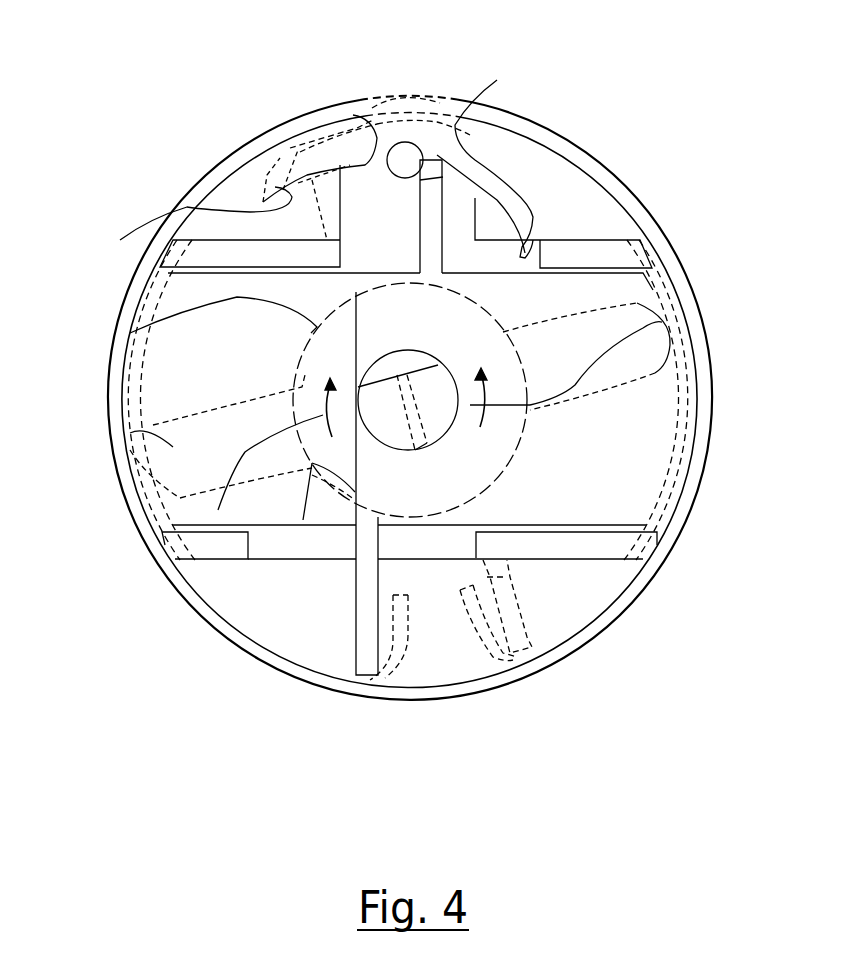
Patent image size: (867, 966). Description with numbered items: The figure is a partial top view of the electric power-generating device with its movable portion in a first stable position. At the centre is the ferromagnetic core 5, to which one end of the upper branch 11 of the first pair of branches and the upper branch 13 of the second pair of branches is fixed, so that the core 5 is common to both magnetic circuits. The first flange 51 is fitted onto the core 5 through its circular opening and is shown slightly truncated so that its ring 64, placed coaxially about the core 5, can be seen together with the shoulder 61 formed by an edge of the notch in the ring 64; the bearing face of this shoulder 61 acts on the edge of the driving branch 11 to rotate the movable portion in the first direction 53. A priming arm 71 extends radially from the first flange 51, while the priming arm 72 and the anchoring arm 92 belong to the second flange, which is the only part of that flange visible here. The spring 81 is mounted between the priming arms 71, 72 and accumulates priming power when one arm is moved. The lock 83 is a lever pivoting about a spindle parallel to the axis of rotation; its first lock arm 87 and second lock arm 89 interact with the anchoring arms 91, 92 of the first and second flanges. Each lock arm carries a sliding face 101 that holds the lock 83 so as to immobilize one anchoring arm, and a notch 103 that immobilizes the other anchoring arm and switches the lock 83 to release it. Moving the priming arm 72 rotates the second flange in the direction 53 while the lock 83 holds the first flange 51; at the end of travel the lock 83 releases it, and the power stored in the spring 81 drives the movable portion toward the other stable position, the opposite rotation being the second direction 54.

The core 5 is at (420, 425).
The driving branch 11 is at (130, 433).
The branch of the second pair 13 is at (650, 277).
The first flange 51 is at (500, 328).
The first direction 53 is at (240, 452).
The second direction 54 is at (632, 322).
The shoulder 61 is at (305, 520).
The ring 64 is at (135, 333).
The priming arm 71 is at (357, 660).
The priming arm 72 is at (547, 640).
The spring 81 is at (393, 683).
The lock 83 is at (397, 124).
The first lock arm 87 is at (518, 197).
The second lock arm 89 is at (282, 175).
The anchoring arm 91 is at (432, 152).
The anchoring arm 92 is at (120, 240).
The sliding face 101 is at (323, 207).
The notch 103 is at (372, 112).